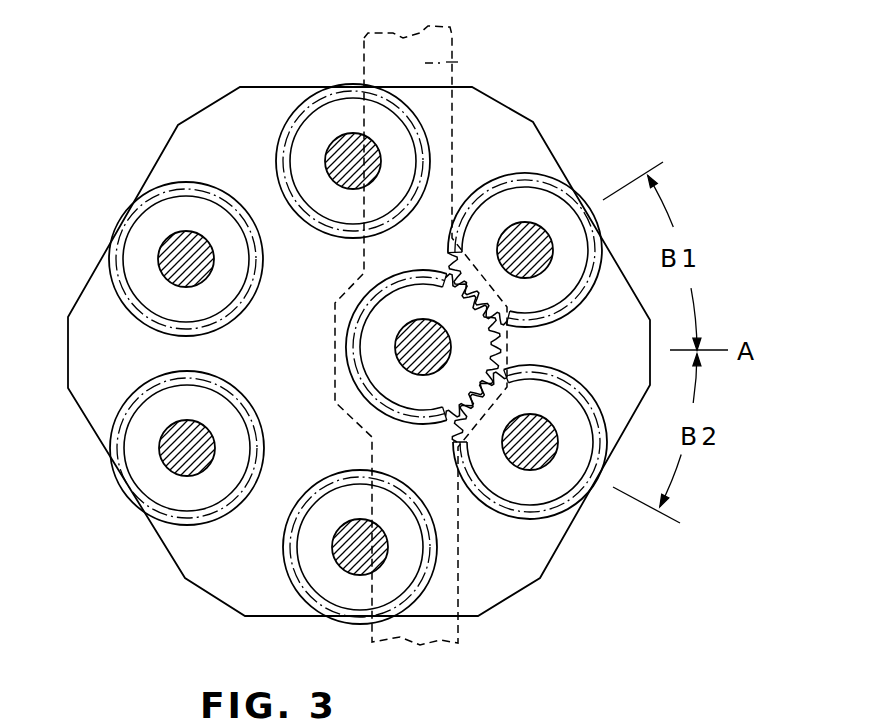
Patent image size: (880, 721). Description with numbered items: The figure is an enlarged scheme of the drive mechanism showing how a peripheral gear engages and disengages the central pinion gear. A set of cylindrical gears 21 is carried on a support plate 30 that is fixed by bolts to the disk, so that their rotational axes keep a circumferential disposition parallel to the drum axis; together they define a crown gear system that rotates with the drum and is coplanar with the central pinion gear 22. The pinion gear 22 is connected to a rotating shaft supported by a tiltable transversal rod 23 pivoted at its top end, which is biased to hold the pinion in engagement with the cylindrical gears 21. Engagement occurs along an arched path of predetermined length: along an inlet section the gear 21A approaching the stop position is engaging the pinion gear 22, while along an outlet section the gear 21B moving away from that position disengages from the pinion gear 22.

The support plate 30 is at (212, 128).
The cylindrical gear 21 is at (327, 125).
The cylindrical gear approaching position A 21A is at (552, 212).
The cylindrical gear moving away from position A 21B is at (545, 488).
The central pinion gear 22 is at (372, 338).
The transversal rod 23 is at (455, 60).